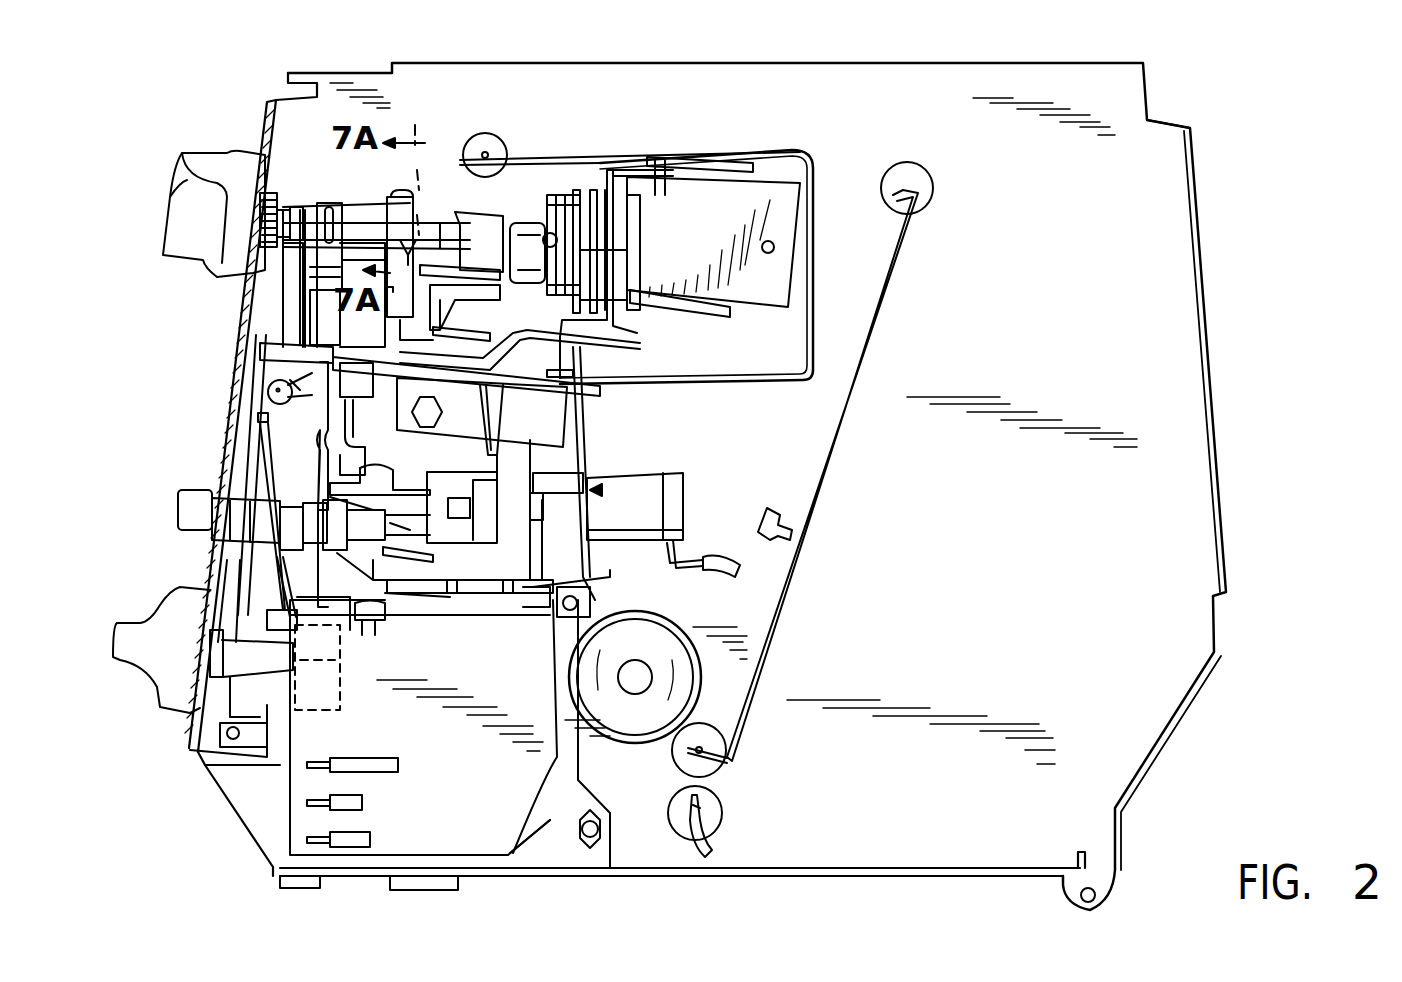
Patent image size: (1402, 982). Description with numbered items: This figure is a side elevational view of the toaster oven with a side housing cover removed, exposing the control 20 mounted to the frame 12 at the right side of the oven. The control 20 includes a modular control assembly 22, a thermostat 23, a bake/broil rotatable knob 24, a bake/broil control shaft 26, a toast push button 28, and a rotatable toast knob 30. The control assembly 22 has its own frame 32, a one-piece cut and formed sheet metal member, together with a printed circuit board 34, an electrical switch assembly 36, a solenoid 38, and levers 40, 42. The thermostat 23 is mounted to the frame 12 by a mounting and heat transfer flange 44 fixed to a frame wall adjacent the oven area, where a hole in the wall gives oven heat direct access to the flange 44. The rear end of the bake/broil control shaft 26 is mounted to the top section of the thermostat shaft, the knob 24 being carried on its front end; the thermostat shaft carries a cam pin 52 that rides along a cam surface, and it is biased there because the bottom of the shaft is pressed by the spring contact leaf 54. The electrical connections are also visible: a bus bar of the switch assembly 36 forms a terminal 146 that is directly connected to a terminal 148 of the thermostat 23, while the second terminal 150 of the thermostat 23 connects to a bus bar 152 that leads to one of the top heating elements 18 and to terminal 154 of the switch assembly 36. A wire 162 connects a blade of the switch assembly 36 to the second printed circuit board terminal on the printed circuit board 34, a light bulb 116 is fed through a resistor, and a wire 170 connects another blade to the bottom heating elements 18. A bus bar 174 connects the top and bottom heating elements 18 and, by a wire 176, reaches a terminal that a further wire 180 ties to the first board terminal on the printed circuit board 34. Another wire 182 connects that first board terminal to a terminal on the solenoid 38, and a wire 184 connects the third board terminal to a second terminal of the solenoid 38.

The frame 12 is at (1198, 220).
The heating elements 18 is at (505, 143).
The control 20 is at (205, 815).
The modular control assembly 22 is at (600, 490).
The thermostat 23 is at (560, 192).
The bake/broil rotatable knob 24 is at (205, 140).
The bake/broil control shaft 26 is at (372, 228).
The toast push button 28 is at (192, 490).
The rotatable toast knob 30 is at (150, 612).
The frame 32 is at (592, 442).
The printed circuit board 34 is at (512, 835).
The electrical switch assembly 36 is at (263, 348).
The solenoid 38 is at (688, 510).
The lever 40 is at (440, 570).
The lever 42 is at (298, 570).
The mounting and heat transfer flange 44 is at (795, 190).
The cam pin 52 is at (548, 235).
The spring contact leaf 54 is at (610, 272).
The light bulb 116 is at (268, 372).
The terminal 146 is at (620, 372).
The terminal 148 is at (640, 335).
The second terminal 150 is at (660, 160).
The bus bar 152 is at (770, 150).
The terminal 154 is at (592, 388).
The wire 162 is at (370, 838).
The wire 170 is at (713, 840).
The bus bar 174 is at (885, 305).
The wire 176 is at (778, 510).
The wire 180 is at (362, 802).
The wire 182 is at (698, 585).
The wire 184 is at (390, 757).